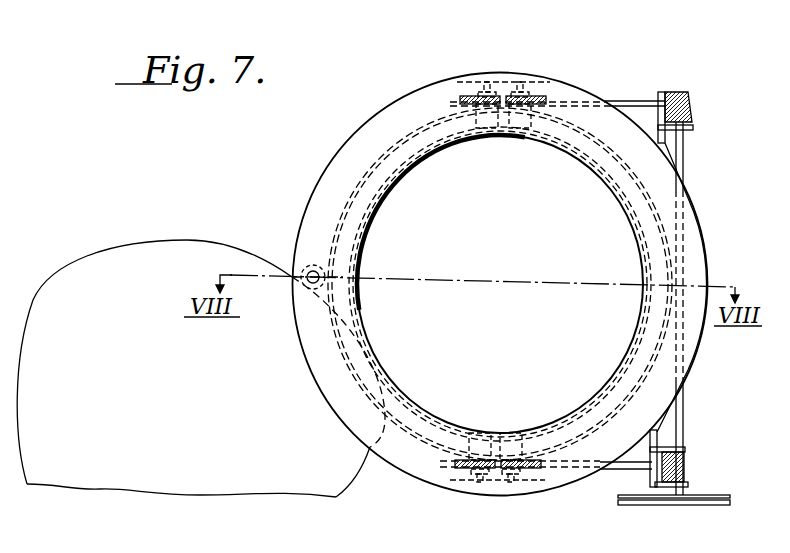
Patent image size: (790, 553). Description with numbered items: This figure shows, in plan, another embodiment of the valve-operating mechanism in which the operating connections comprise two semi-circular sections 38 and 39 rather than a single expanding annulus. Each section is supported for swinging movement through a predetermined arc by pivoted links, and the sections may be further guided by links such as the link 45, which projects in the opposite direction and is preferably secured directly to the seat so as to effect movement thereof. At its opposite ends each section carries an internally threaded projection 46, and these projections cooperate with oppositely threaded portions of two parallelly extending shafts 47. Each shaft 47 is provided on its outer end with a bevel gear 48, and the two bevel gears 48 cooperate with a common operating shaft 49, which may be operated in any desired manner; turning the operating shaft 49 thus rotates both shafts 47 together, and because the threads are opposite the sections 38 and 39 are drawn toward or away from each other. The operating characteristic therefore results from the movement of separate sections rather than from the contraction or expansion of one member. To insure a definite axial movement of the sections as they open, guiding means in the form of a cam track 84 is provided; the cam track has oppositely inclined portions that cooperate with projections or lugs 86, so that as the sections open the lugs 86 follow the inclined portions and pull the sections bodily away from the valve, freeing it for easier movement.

The semi-circular section 38 is at (396, 440).
The semi-circular section 39 is at (663, 229).
The link 45 is at (340, 277).
The internally threaded projection 46 is at (486, 80).
The shaft 47 is at (628, 101).
The bevel gear 48 is at (673, 104).
The common operating shaft 49 is at (679, 423).
The cam track 84 is at (457, 81).
The projection 86 is at (519, 80).